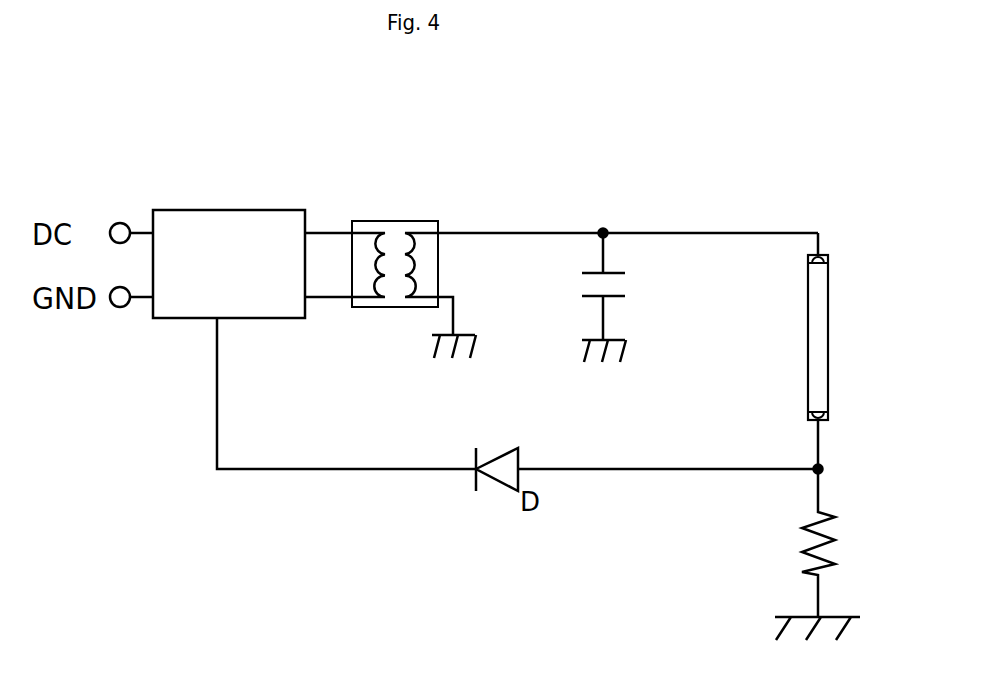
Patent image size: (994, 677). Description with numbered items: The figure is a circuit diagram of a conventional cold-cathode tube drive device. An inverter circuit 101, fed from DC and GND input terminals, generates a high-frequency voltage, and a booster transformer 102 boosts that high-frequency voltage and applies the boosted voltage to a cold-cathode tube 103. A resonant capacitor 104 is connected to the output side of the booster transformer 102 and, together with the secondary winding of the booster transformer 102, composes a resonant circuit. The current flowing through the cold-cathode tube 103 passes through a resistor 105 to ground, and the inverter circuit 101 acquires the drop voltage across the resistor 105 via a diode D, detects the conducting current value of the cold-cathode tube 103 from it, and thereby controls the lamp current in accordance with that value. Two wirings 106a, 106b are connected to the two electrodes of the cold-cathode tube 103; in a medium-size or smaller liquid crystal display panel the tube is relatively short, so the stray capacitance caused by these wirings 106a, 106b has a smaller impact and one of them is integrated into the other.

The inverter circuit 101 is at (264, 212).
The booster transformer 102 is at (414, 220).
The cold-cathode tube 103 is at (832, 318).
The resonant capacitor 104 is at (636, 289).
The resistor 105 is at (842, 558).
The wiring 106a is at (822, 239).
The wiring 106b is at (823, 444).